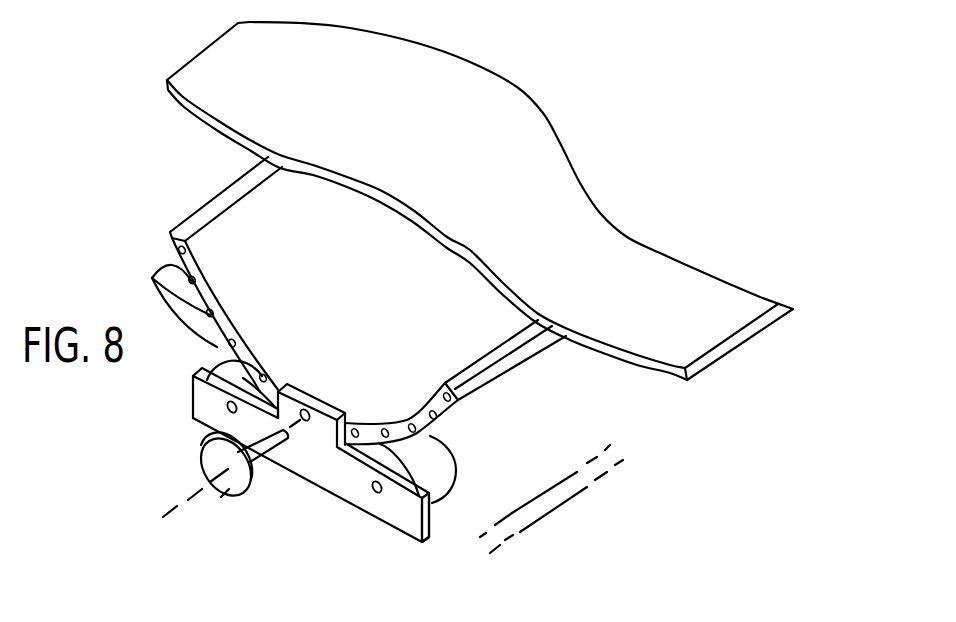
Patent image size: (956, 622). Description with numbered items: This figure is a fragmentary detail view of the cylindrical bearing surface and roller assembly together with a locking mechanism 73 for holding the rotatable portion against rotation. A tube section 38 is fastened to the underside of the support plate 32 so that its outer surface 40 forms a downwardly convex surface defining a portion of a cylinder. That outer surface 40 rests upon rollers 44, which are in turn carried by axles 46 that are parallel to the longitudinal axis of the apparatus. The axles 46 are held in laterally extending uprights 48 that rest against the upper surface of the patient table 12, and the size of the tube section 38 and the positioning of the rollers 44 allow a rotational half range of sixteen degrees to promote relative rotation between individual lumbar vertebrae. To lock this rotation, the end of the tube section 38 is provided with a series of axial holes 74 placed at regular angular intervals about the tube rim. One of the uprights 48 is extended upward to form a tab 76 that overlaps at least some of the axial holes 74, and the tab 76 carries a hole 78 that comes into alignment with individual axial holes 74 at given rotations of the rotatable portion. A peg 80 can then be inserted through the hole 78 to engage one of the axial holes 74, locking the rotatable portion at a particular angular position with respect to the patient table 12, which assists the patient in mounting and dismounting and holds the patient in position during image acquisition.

The patient table 12 is at (548, 503).
The support plate 32 is at (412, 113).
The tube section 38 is at (207, 215).
The outer surface 40 is at (497, 375).
The rollers 44 is at (442, 480).
The axles 46 is at (377, 487).
The uprights 48 is at (429, 540).
The locking mechanism 73 is at (314, 459).
The axial holes 74 is at (152, 278).
The tab 76 is at (296, 385).
The hole 78 is at (330, 412).
The peg 80 is at (219, 503).